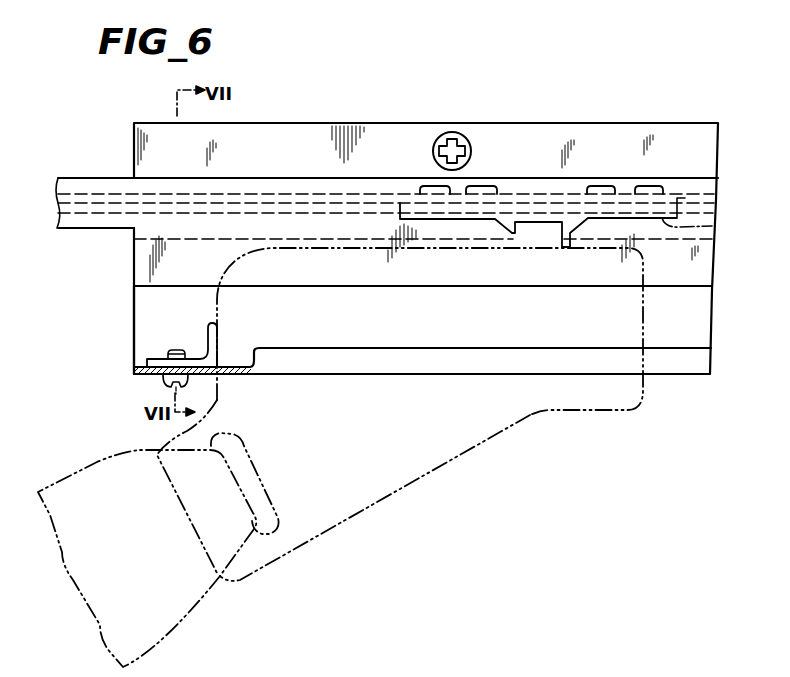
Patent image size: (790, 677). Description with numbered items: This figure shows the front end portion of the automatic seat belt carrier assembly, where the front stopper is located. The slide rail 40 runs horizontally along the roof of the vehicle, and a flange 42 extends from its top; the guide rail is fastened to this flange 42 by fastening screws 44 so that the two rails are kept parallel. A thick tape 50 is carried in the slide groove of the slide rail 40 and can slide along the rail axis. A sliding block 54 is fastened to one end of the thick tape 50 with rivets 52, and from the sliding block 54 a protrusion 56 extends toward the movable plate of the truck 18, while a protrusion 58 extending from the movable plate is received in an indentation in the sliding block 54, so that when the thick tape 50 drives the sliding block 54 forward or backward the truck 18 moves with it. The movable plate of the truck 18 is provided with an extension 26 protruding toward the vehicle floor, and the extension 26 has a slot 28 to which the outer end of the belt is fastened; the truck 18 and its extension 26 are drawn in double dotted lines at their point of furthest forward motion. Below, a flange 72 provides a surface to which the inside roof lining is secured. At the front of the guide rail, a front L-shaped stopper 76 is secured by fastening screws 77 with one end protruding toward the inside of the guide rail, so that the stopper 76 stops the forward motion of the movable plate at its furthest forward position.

The truck 18 is at (441, 473).
The extension 26 is at (368, 503).
The slot 28 is at (253, 472).
The slide rail 40 is at (230, 178).
The flange 42 is at (598, 123).
The fastening screws 44 is at (467, 133).
The thick tape 50 is at (685, 198).
The rivets 52 is at (595, 187).
The sliding block 54 is at (712, 226).
The protrusion 56 is at (493, 219).
The protrusion 58 is at (565, 238).
The flange 72 is at (163, 283).
The front L-shaped stopper 76 is at (208, 343).
The fastening screws 77 is at (163, 387).